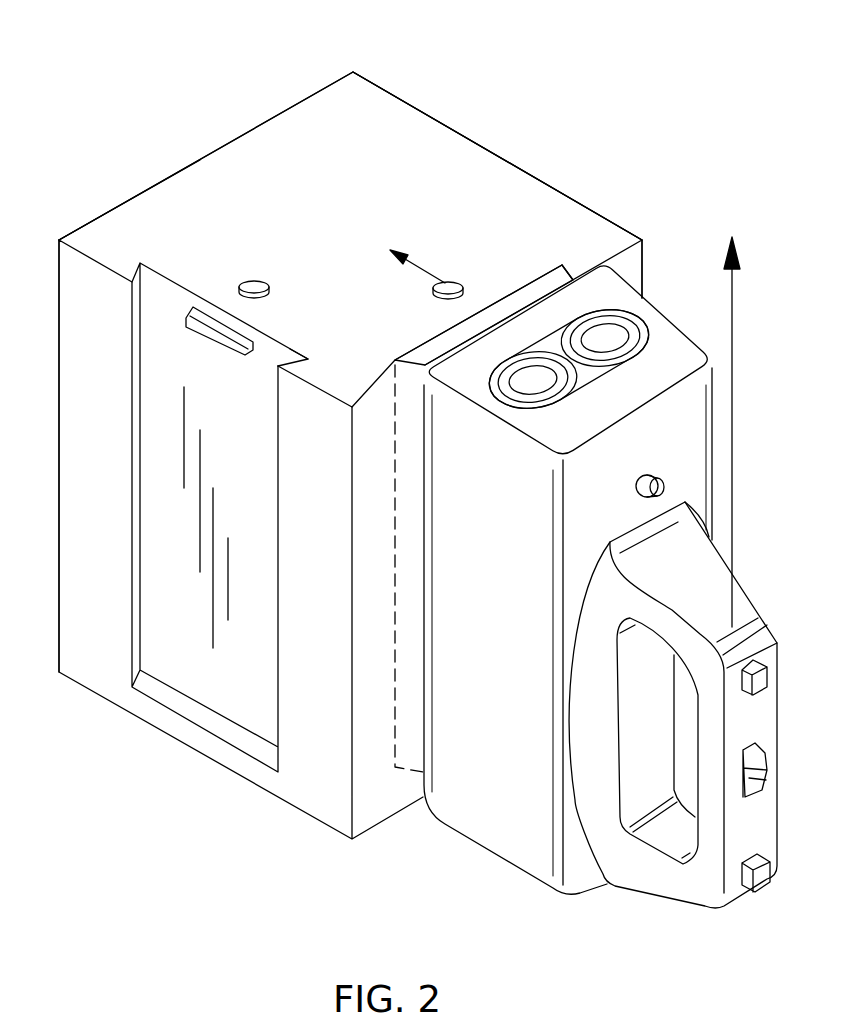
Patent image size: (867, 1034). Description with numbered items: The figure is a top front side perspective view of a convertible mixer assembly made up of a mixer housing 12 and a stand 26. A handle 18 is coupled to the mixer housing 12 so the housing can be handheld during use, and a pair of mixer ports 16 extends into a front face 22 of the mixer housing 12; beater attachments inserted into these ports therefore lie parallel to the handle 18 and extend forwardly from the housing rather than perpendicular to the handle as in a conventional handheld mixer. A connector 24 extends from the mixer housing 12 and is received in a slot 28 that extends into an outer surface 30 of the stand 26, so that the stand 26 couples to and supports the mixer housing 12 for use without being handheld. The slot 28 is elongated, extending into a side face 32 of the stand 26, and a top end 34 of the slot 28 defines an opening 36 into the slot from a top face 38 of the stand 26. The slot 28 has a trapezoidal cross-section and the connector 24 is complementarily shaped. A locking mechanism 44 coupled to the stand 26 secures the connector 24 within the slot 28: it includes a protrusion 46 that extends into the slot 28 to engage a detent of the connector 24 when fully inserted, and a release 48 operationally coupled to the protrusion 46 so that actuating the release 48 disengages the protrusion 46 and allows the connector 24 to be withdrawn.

The mixer housing 12 is at (487, 810).
The mixer ports 16 is at (538, 388).
The handle 18 is at (757, 818).
The front face 22 is at (693, 358).
The connector 24 is at (487, 315).
The stand 26 is at (547, 200).
The slot 28 is at (536, 282).
The outer surface 30 is at (318, 718).
The side face 32 is at (108, 368).
The top end 34 is at (133, 262).
The opening 36 is at (279, 350).
The top face 38 is at (252, 192).
The locking mechanism 44 is at (218, 277).
The protrusion 46 is at (201, 318).
The release 48 is at (253, 288).